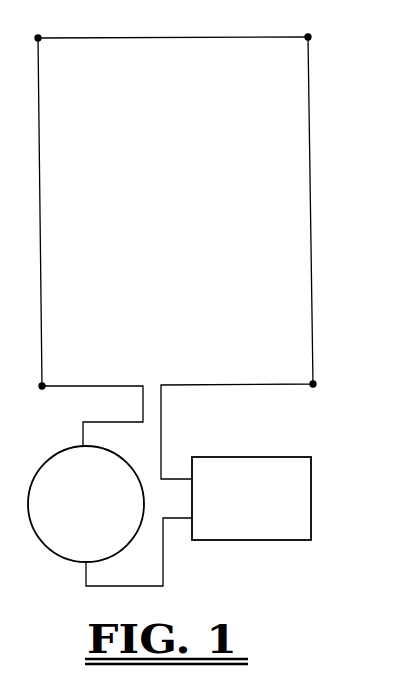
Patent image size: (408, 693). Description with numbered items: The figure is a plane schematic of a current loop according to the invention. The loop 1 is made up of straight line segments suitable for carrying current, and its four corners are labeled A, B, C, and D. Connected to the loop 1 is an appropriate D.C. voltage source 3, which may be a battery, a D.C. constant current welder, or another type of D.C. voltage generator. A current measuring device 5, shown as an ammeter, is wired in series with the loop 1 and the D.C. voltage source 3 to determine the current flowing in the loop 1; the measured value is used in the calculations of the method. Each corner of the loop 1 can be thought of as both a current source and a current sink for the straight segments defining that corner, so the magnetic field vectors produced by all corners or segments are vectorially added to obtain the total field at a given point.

The loop 1 is at (311, 182).
The D.C. voltage source 3 is at (313, 500).
The current measuring device 5 is at (48, 553).